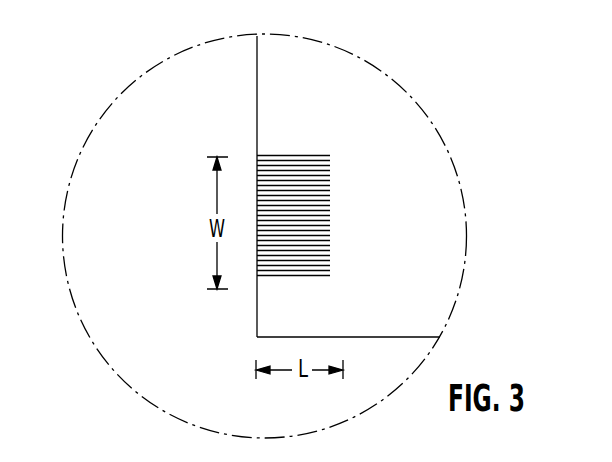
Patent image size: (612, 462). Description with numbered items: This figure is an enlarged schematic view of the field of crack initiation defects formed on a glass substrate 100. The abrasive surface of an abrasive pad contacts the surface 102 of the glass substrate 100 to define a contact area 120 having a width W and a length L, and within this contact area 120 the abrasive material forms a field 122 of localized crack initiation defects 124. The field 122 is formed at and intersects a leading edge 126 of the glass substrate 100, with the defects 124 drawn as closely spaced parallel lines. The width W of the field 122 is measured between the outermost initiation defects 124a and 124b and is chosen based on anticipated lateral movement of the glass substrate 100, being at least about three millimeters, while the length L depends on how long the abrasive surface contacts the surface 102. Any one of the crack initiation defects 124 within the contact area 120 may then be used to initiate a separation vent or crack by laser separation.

The glass substrate 100 is at (463, 188).
The surface 102 is at (413, 281).
The contact area 120 is at (365, 124).
The field of localized crack initiation defects 122 is at (337, 207).
The crack initiation defect 124 is at (330, 217).
The outermost initiation defect 124a is at (298, 155).
The outermost initiation defect 124b is at (296, 277).
The leading edge 126 is at (257, 110).